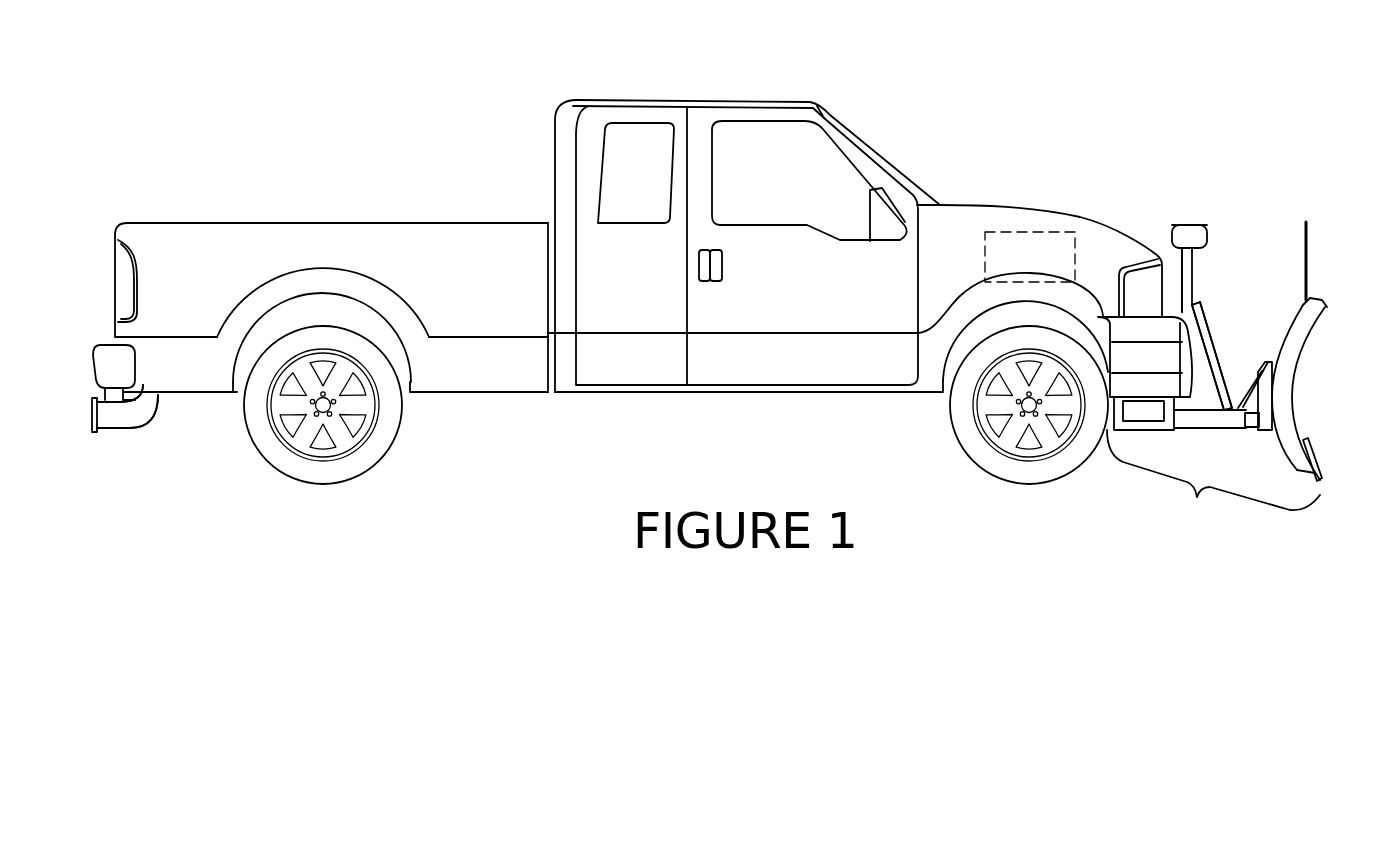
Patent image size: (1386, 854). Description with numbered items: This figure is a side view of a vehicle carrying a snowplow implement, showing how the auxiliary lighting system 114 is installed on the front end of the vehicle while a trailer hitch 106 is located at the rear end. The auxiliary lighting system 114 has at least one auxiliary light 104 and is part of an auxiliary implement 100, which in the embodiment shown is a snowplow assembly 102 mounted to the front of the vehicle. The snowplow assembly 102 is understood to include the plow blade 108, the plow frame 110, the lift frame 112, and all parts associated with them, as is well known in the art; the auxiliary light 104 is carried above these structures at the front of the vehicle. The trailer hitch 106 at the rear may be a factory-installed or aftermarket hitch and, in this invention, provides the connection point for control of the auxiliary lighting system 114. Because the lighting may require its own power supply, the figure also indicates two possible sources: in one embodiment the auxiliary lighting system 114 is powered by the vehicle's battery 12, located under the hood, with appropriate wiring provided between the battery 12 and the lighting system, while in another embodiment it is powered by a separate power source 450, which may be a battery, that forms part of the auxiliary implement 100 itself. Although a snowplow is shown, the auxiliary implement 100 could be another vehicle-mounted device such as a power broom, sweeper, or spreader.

The vehicle battery 12 is at (1025, 245).
The auxiliary implement 100 is at (1221, 418).
The snowplow assembly 102 is at (1323, 217).
The auxiliary light 104 is at (1204, 223).
The trailer hitch 106 is at (123, 417).
The plow blade 108 is at (1292, 378).
The plow frame 110 is at (1198, 407).
The lift frame 112 is at (1190, 281).
The auxiliary lighting system 114 is at (1198, 135).
The separate power source 450 is at (1130, 408).